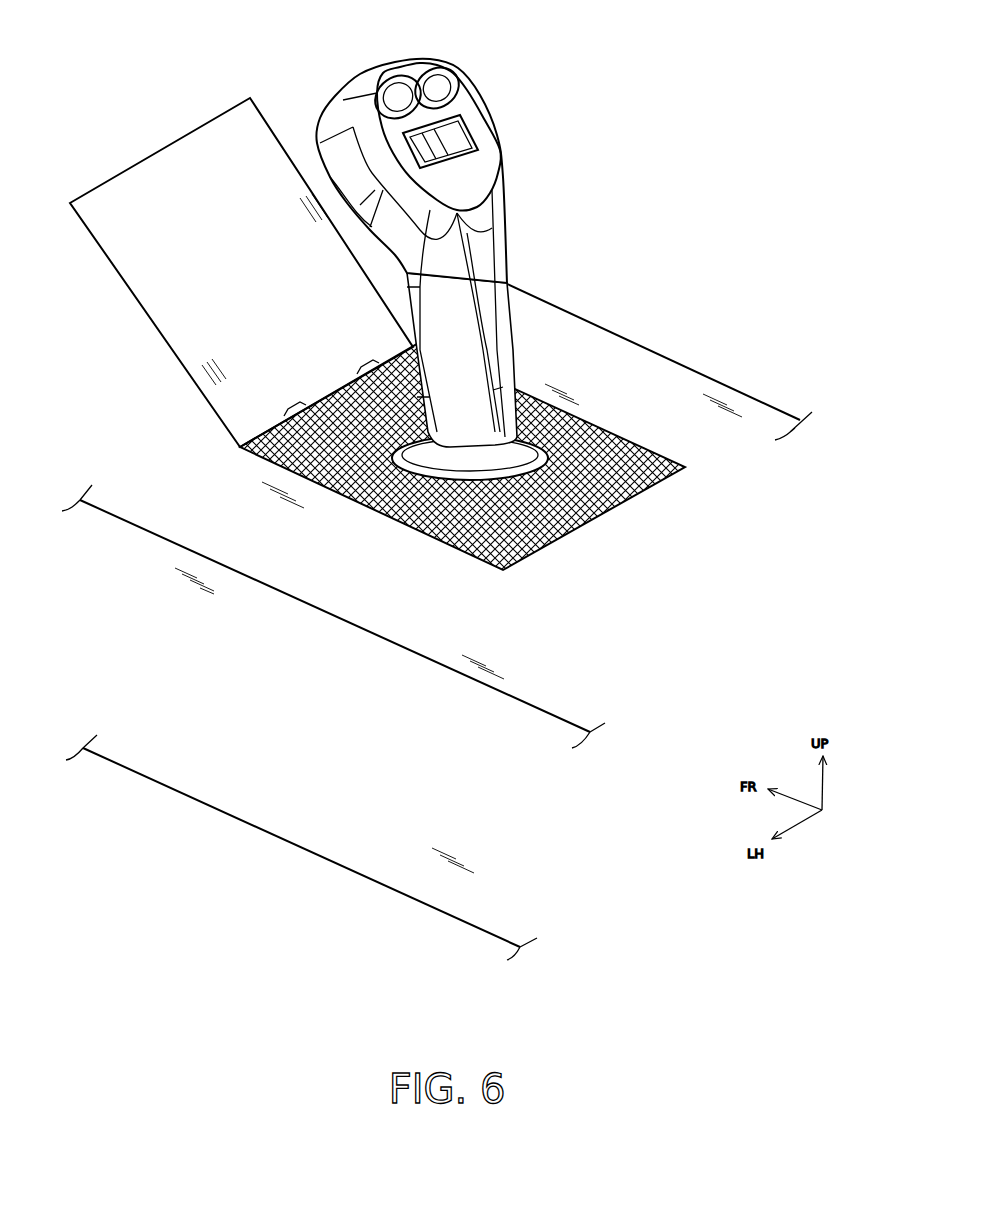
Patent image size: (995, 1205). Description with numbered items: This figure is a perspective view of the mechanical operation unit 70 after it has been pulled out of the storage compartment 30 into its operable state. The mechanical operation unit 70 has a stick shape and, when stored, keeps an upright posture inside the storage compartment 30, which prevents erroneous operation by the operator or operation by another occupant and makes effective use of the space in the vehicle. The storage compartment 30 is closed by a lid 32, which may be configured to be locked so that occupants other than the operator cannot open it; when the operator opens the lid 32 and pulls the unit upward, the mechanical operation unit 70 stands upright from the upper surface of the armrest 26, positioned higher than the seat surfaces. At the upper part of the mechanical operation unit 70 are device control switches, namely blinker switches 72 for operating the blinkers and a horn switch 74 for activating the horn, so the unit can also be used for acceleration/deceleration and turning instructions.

The armrest 26 is at (677, 400).
The storage compartment 30 is at (593, 470).
The lid 32 is at (205, 177).
The mechanical operation unit 70 is at (478, 241).
The blinker switches 72 is at (440, 63).
The horn switch 74 is at (458, 136).